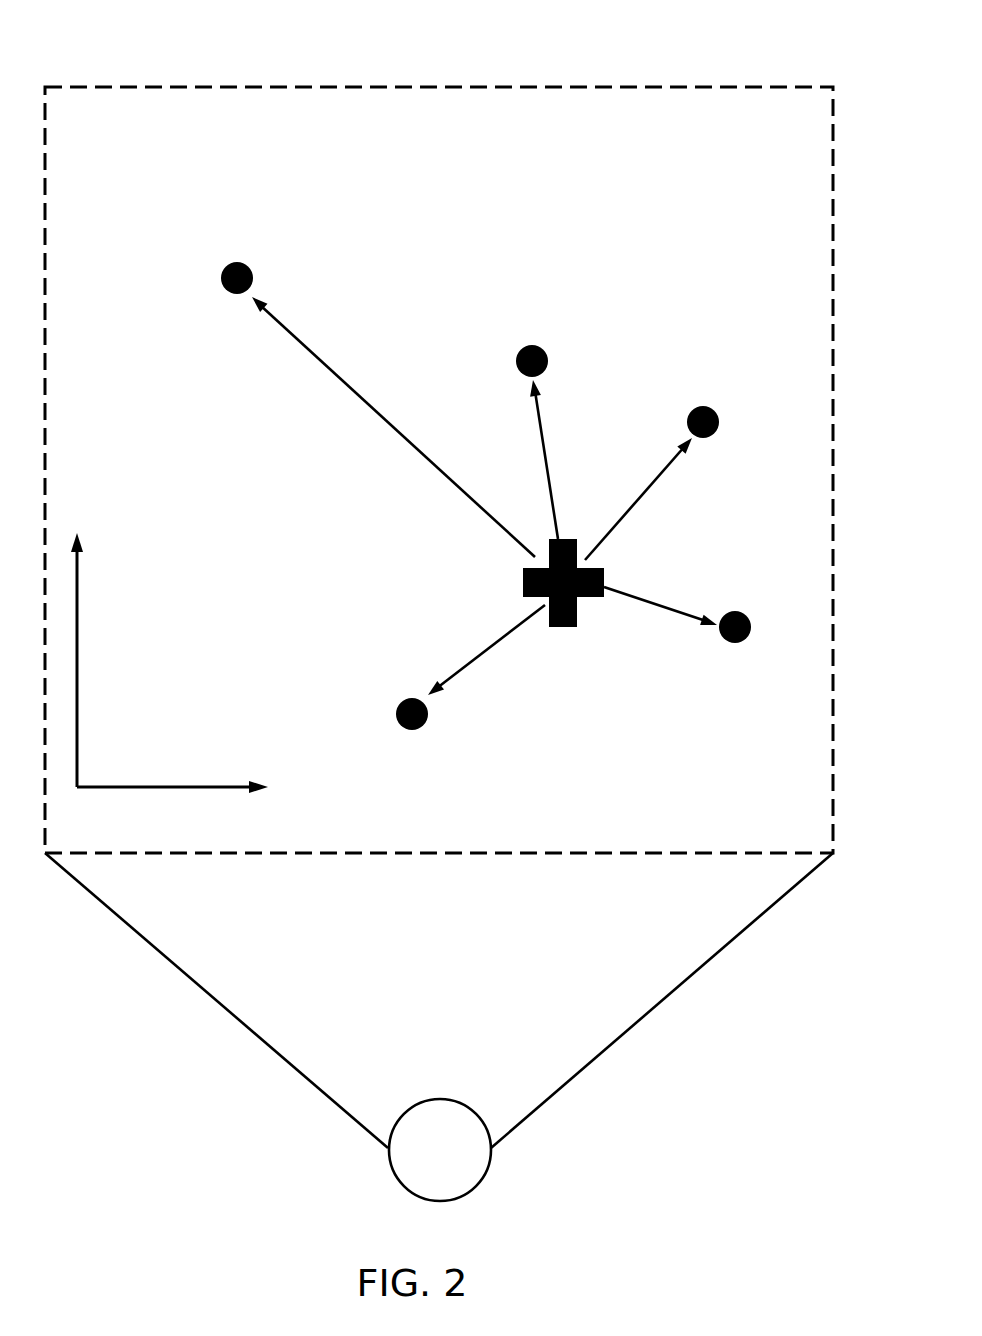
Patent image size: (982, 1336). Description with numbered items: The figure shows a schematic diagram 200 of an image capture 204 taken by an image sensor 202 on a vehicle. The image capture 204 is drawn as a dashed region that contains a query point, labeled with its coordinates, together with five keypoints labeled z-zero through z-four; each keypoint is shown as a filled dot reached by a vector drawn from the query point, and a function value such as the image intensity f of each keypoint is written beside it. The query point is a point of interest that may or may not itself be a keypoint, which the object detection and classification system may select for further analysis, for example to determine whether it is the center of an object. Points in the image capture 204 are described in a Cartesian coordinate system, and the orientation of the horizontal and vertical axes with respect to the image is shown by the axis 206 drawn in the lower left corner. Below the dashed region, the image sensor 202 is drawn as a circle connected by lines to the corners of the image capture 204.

The schematic diagram 200 is at (137, 37).
The image sensor 202 is at (440, 1098).
The image capture 204 is at (439, 470).
The axis 206 is at (210, 787).